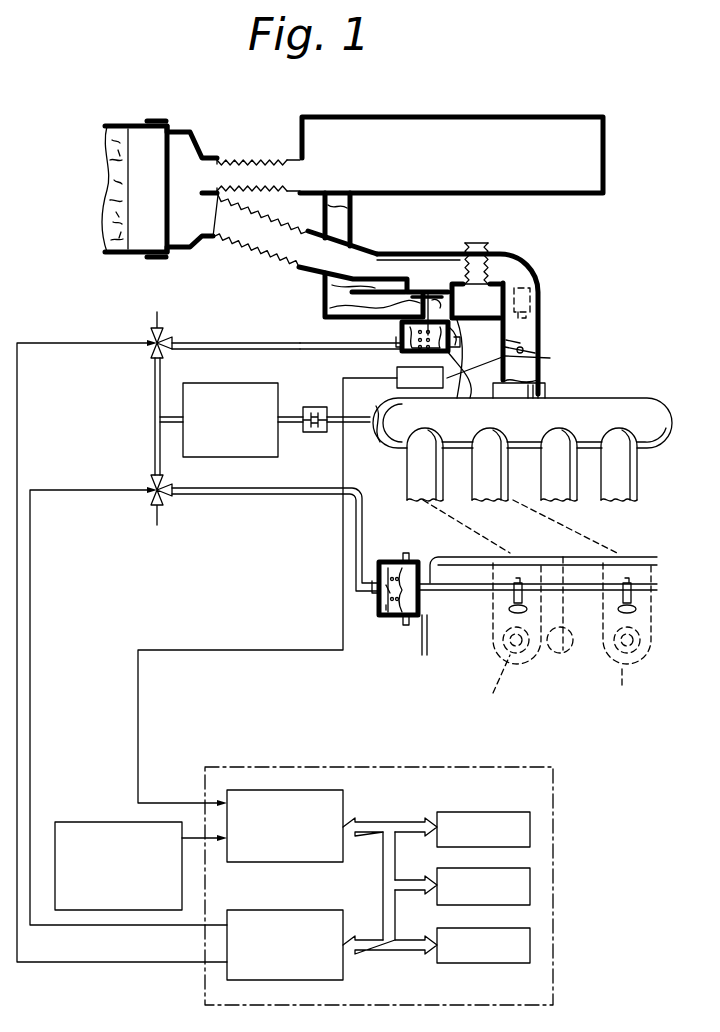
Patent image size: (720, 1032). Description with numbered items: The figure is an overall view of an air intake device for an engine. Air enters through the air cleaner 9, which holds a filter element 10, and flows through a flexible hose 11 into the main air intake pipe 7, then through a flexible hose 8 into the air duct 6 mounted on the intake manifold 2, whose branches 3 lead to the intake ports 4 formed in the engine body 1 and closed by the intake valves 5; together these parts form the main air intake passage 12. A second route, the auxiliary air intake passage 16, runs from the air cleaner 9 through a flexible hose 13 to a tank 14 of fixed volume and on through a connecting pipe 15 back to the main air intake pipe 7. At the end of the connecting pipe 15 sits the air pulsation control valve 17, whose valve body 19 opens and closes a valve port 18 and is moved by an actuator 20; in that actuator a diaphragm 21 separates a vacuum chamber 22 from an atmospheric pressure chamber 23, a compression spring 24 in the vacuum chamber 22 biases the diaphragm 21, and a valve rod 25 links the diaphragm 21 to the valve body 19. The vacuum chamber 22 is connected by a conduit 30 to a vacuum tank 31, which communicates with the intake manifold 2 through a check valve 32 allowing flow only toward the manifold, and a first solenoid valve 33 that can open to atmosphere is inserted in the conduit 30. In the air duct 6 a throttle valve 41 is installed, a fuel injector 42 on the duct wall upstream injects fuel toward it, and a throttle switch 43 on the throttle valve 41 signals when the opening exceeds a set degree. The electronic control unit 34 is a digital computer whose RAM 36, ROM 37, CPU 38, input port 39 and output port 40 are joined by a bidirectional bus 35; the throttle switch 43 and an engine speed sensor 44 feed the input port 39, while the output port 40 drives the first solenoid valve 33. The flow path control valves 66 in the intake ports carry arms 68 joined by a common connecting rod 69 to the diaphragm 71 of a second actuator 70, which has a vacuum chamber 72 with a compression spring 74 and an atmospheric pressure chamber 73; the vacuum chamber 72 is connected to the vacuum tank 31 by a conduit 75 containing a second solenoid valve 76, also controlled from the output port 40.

The engine body 1 is at (460, 566).
The intake manifold 2 is at (618, 406).
The branches of the intake manifold 3 is at (622, 490).
The intake ports 4 is at (490, 610).
The intake valves 5 is at (549, 687).
The air duct 6 is at (540, 294).
The main air intake pipe 7 is at (422, 255).
The flexible hose 8 is at (488, 258).
The air cleaner 9 is at (180, 124).
The filter element 10 is at (100, 142).
The flexible hose 11 is at (245, 254).
The main air intake passage 12 is at (388, 256).
The flexible hose 13 is at (246, 156).
The tank 14 is at (390, 114).
The connecting pipe 15 is at (322, 296).
The auxiliary air intake passage 16 is at (352, 210).
The air pulsation control valve 17 is at (392, 362).
The valve port 18 is at (434, 292).
The valve body 19 is at (476, 301).
The actuator 20 is at (342, 349).
The diaphragm 21 is at (458, 328).
The vacuum chamber 22 is at (513, 372).
The atmospheric pressure chamber 23 is at (506, 340).
The compression spring 24 is at (460, 371).
The valve rod 25 is at (330, 306).
The conduit 30 is at (210, 343).
The vacuum tank 31 is at (220, 383).
The check valve 32 is at (314, 434).
The first solenoid valve 33 is at (168, 336).
The electronic control unit 34 is at (562, 987).
The bidirectional bus 35 is at (390, 953).
The RAM 36 is at (532, 816).
The ROM 37 is at (532, 882).
The CPU 38 is at (532, 942).
The input port 39 is at (292, 788).
The output port 40 is at (284, 910).
The throttle valve 41 is at (524, 350).
The fuel injector 42 is at (534, 268).
The throttle switch 43 is at (398, 383).
The engine speed sensor 44 is at (82, 820).
The flow path control valve 66 is at (524, 654).
The arm 68 is at (530, 597).
The common connecting rod 69 is at (582, 590).
The actuator 70 is at (388, 550).
The diaphragm 71 is at (403, 626).
The vacuum chamber 72 is at (385, 620).
The atmospheric pressure chamber 73 is at (408, 566).
The compression spring 74 is at (380, 603).
The conduit 75 is at (272, 498).
The second solenoid valve 76 is at (168, 498).